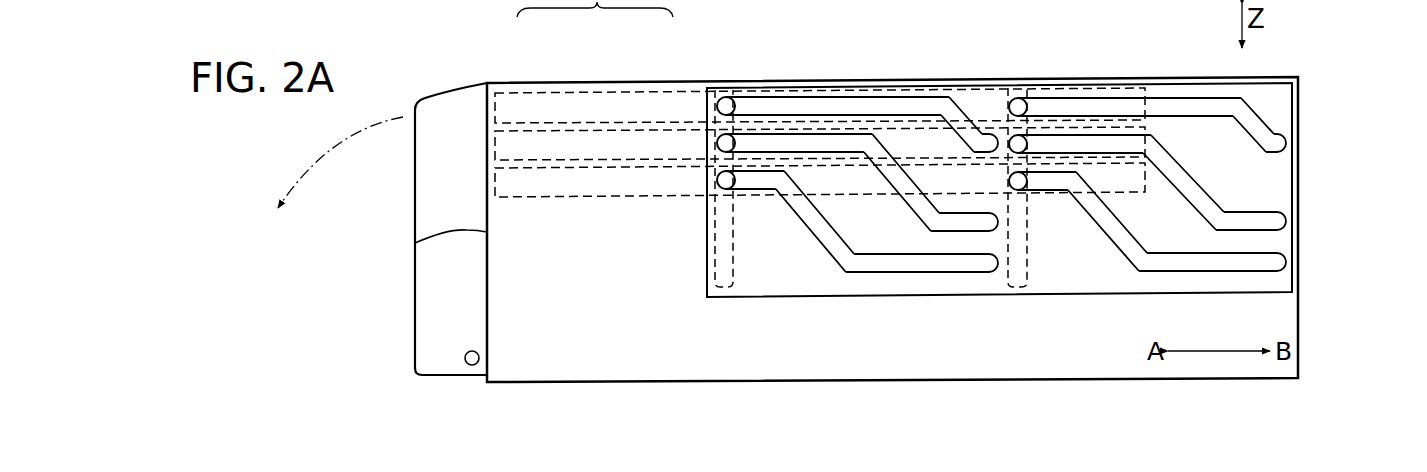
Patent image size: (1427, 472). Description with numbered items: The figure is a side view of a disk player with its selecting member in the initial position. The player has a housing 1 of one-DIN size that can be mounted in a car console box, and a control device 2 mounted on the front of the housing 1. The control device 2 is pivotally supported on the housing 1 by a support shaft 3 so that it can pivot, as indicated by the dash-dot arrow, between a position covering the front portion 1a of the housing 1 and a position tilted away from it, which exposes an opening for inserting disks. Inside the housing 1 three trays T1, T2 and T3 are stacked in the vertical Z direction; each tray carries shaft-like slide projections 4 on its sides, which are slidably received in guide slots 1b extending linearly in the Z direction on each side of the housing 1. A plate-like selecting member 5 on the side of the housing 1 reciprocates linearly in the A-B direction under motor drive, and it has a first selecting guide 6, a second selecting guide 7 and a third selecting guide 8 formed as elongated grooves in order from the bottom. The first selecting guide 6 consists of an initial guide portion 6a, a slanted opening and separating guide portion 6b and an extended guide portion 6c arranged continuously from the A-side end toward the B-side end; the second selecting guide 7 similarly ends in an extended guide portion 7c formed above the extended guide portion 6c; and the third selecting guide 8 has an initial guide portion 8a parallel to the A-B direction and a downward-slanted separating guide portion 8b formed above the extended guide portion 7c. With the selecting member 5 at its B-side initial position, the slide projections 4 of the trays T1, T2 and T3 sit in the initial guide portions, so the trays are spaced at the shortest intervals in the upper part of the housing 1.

The housing 1 is at (1180, 381).
The front portion 1a is at (415, 243).
The guide slots 1b is at (715, 270).
The control device 2 is at (422, 320).
The support shaft 3 is at (472, 365).
The slide projections 4 is at (735, 177).
The selecting member 5 is at (1118, 286).
The first selecting guide 6 is at (1038, 321).
The initial guide portion 6a is at (755, 187).
The opening and separating guide portion 6b is at (823, 244).
The extended guide portion 6c is at (905, 259).
The second selecting guide 7 is at (1042, 227).
The extended guide portion 7c is at (957, 224).
The third selecting guide 8 is at (1041, 83).
The initial guide portion 8a is at (891, 110).
The separating guide portion 8b is at (963, 114).
The tray T1 is at (632, 167).
The tray T2 is at (583, 130).
The tray T3 is at (533, 92).